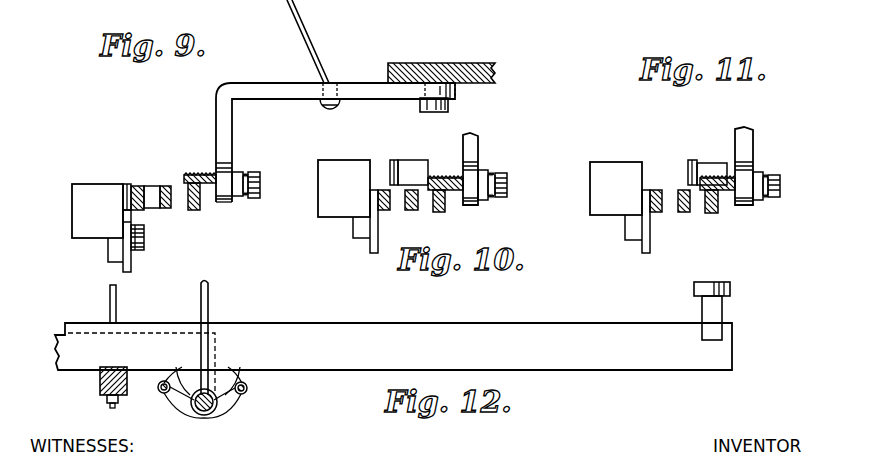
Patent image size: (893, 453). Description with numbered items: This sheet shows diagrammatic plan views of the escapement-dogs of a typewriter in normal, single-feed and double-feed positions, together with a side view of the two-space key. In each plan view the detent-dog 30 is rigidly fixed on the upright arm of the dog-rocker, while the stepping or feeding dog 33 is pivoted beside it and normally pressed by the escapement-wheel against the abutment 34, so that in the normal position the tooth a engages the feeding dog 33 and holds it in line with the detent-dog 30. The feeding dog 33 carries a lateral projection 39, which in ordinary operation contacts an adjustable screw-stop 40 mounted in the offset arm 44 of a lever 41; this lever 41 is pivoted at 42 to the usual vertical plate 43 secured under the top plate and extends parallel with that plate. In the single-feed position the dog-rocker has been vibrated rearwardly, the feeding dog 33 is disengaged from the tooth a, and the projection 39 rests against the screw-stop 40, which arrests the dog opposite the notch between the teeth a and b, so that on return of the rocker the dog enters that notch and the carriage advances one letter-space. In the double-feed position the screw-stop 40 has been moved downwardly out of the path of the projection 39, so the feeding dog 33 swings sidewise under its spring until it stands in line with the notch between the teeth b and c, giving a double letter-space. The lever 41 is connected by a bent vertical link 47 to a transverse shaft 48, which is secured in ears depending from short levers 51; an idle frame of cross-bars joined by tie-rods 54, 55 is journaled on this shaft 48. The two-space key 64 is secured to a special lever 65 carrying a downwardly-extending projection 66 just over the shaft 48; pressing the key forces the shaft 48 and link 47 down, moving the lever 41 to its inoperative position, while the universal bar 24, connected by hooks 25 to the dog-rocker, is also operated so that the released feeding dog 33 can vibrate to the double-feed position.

In FIG. 12, the universal bar 24 is at (100, 383).
In FIG. 12, the hooks 25 is at (116, 300).
In FIG. 9, the detent-dog 30 is at (131, 268).
In FIG. 10, the detent-dog 30 is at (370, 250).
In FIG. 11, the detent-dog 30 is at (650, 250).
In FIG. 9, the stepping or feeding dog 33 is at (127, 184).
In FIG. 10, the stepping or feeding dog 33 is at (393, 160).
In FIG. 11, the stepping or feeding dog 33 is at (692, 160).
In FIG. 9, the abutment 34 is at (97, 211).
In FIG. 10, the abutment 34 is at (344, 188).
In FIG. 11, the abutment 34 is at (616, 188).
In FIG. 9, the lateral projection 39 is at (155, 186).
In FIG. 10, the lateral projection 39 is at (420, 160).
In FIG. 11, the lateral projection 39 is at (715, 163).
In FIG. 9, the adjustable screw-stop 40 is at (200, 171).
In FIG. 10, the adjustable screw-stop 40 is at (445, 174).
In FIG. 11, the adjustable screw-stop 40 is at (725, 196).
In FIG. 9, the lever 41 is at (339, 88).
In FIG. 9, the pivot 42 is at (448, 105).
In FIG. 9, the vertical plate 43 is at (468, 63).
In FIG. 9, the offset arm 44 is at (232, 117).
In FIG. 10, the offset arm 44 is at (478, 150).
In FIG. 11, the offset arm 44 is at (753, 142).
In FIG. 9, the bent vertical link 47 is at (302, 22).
In FIG. 12, the bent vertical link 47 is at (208, 296).
In FIG. 12, the transverse shaft 48 is at (206, 415).
In FIG. 12, the short levers 51 is at (65, 330).
In FIG. 12, the tie-rod 54 is at (158, 392).
In FIG. 12, the tie-rod 55 is at (247, 392).
In FIG. 12, the auxiliary two-space key 64 is at (714, 280).
In FIG. 12, the special lever 65 is at (393, 357).
In FIG. 12, the downwardly-extending projection 66 is at (232, 380).
In FIG. 9, the tooth a is at (140, 210).
In FIG. 10, the tooth a is at (386, 210).
In FIG. 11, the tooth a is at (657, 212).
In FIG. 9, the tooth b is at (168, 208).
In FIG. 10, the tooth b is at (412, 210).
In FIG. 11, the tooth b is at (684, 212).
In FIG. 9, the tooth c is at (195, 210).
In FIG. 10, the tooth c is at (440, 212).
In FIG. 11, the tooth c is at (712, 213).